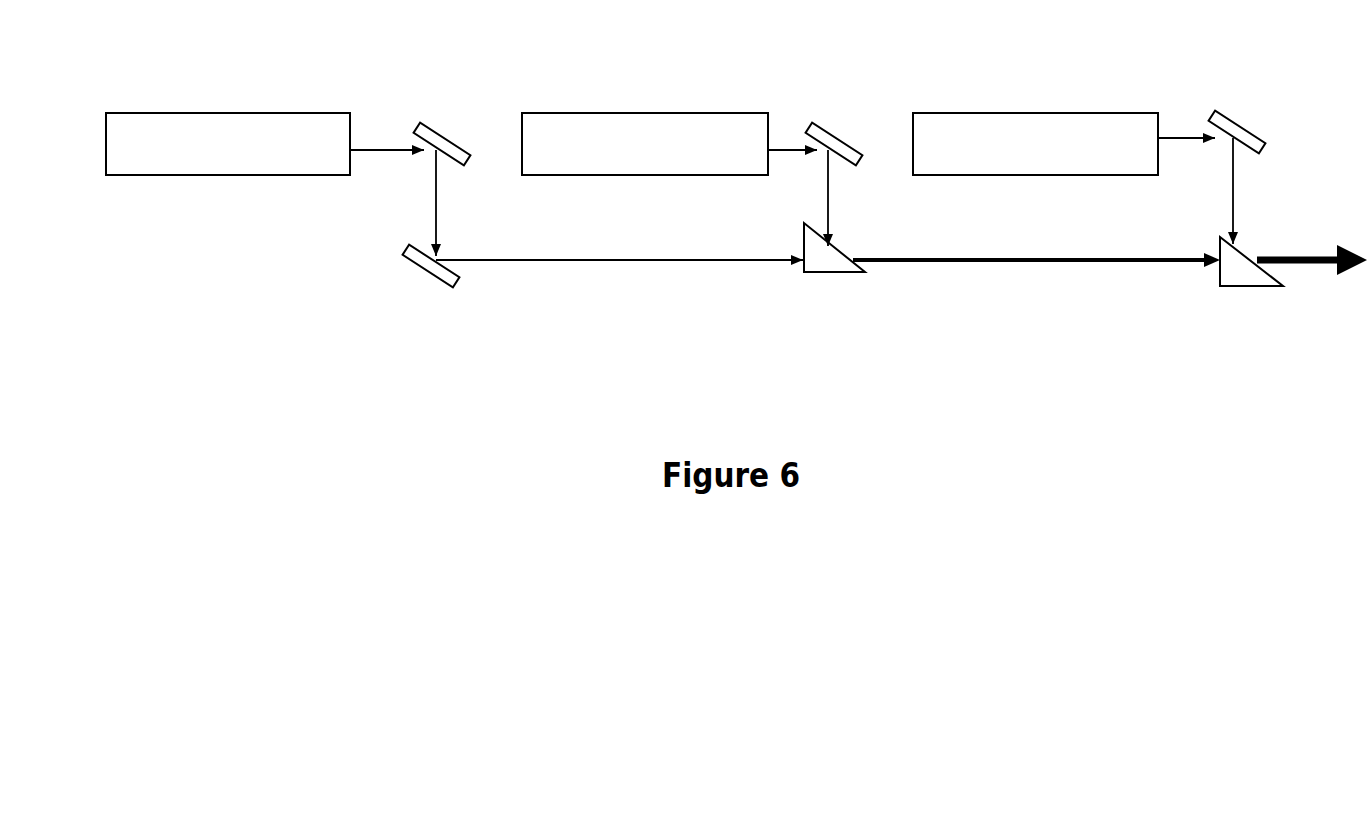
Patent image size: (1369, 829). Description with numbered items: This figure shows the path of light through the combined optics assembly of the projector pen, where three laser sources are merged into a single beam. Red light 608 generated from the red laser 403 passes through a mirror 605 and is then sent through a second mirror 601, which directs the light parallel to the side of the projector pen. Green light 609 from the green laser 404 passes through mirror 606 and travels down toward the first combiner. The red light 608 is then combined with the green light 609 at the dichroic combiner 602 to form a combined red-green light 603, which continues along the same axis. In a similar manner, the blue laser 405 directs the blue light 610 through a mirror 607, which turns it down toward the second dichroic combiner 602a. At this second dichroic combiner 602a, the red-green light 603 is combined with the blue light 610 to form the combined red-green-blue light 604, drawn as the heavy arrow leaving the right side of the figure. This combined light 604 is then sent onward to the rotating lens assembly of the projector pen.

The red laser 403 is at (265, 144).
The green laser 404 is at (669, 144).
The blue laser 405 is at (1064, 144).
The second mirror 601 is at (400, 285).
The dichroic combiner 602 is at (832, 288).
The second dichroic combiner 602a is at (1251, 316).
The combined red-green light 603 is at (1036, 276).
The combined light 604 is at (1312, 249).
The mirror 605 is at (430, 101).
The mirror 606 is at (827, 107).
The mirror 607 is at (1254, 101).
The red light 608 is at (619, 279).
The green light 609 is at (849, 198).
The blue light 610 is at (1254, 191).